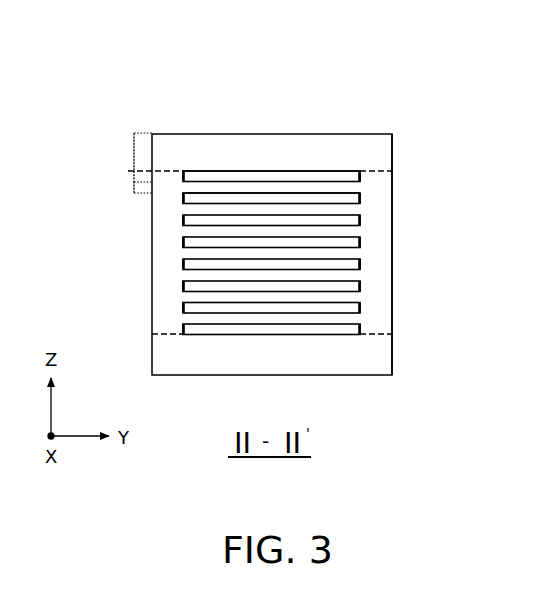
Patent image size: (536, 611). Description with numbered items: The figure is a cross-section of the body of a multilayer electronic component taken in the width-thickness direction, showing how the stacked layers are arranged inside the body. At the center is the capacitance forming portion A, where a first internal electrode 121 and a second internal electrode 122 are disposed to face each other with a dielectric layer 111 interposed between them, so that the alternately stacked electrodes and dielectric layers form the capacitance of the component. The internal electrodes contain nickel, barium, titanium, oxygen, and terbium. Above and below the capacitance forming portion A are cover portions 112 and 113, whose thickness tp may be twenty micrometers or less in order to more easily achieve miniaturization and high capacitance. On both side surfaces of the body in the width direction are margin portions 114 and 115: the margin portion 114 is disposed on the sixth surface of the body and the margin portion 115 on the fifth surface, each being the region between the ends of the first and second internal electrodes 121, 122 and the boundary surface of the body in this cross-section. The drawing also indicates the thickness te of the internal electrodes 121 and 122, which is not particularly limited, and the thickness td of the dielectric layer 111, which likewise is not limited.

The dielectric layer 111 is at (360, 182).
The cover portion 112 is at (276, 150).
The cover portion 113 is at (385, 354).
The margin portion 114 is at (168, 290).
The margin portion 115 is at (385, 278).
The first internal electrode 121 is at (360, 171).
The second internal electrode 122 is at (360, 195).
The capacitance forming portion A is at (178, 256).
The thickness of the cover portions tp is at (121, 152).
The thickness of the internal electrodes te is at (134, 171).
The thickness of the dielectric layer td is at (134, 186).